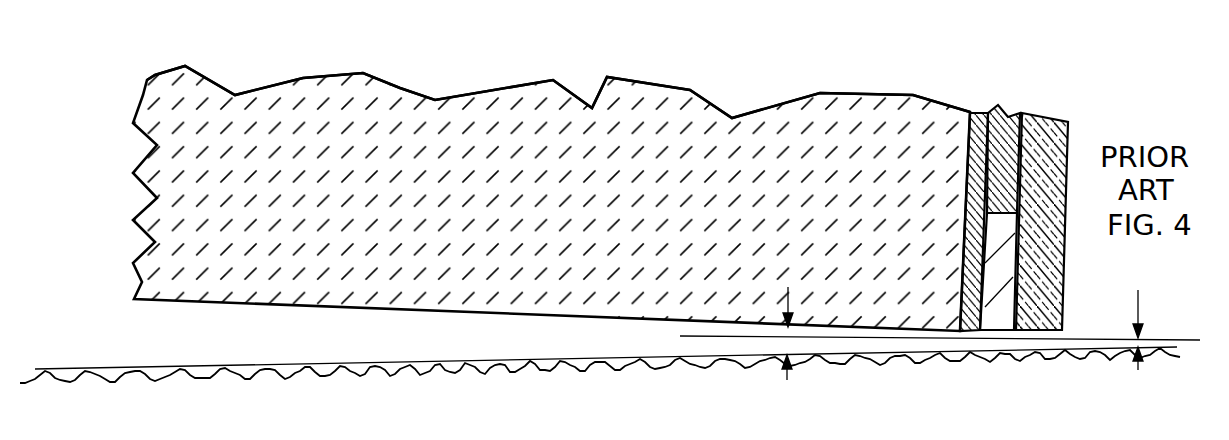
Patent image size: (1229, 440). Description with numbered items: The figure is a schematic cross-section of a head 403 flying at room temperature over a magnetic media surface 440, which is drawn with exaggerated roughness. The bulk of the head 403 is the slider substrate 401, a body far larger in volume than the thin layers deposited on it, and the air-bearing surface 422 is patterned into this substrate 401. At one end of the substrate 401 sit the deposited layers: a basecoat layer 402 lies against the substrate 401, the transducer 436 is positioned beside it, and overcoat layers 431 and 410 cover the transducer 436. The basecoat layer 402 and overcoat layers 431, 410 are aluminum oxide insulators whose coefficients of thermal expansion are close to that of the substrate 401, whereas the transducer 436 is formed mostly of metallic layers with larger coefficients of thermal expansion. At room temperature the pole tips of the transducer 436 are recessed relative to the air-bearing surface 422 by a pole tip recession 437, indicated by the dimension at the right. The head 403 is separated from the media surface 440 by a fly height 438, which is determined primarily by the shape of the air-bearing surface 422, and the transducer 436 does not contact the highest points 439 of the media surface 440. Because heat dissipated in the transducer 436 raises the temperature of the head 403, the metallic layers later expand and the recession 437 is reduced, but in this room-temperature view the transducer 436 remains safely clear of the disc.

The substrate 401 is at (575, 224).
The head 403 is at (465, 66).
The basecoat layer 402 is at (975, 112).
The overcoat layer 431 is at (1008, 115).
The transducer 436 is at (1000, 333).
The overcoat layer 410 is at (1053, 121).
The air-bearing surface 422 is at (897, 332).
The highest points 439 is at (412, 350).
The magnetic media surface 440 is at (769, 360).
The fly height 438 is at (787, 380).
The pole tip recession 437 is at (1138, 370).